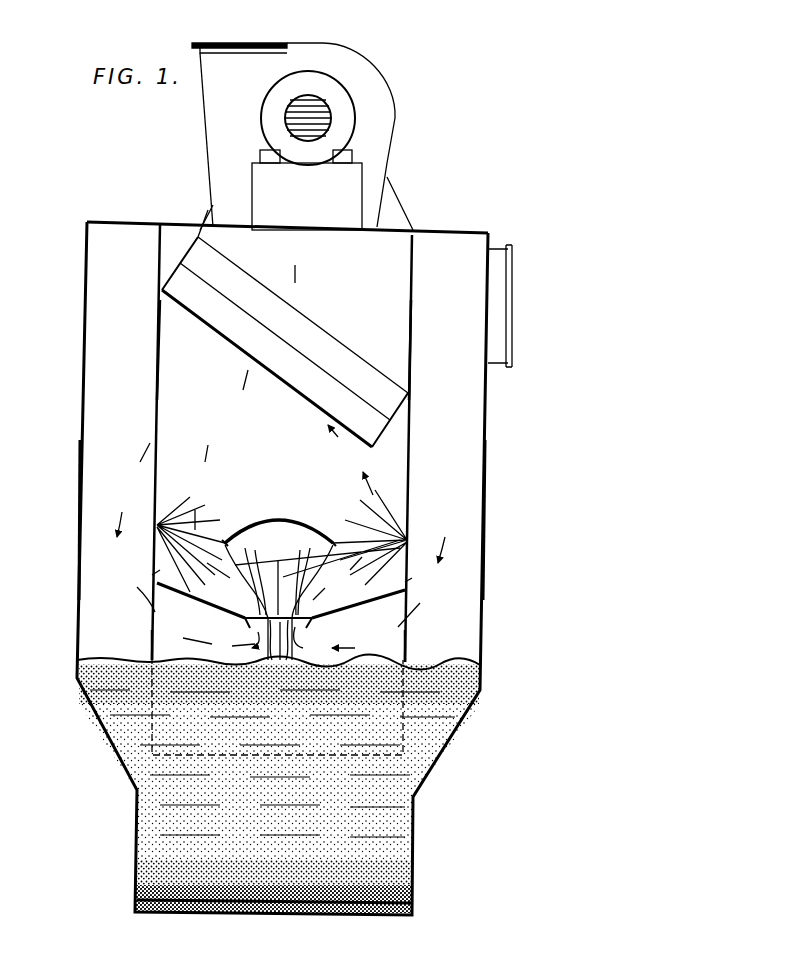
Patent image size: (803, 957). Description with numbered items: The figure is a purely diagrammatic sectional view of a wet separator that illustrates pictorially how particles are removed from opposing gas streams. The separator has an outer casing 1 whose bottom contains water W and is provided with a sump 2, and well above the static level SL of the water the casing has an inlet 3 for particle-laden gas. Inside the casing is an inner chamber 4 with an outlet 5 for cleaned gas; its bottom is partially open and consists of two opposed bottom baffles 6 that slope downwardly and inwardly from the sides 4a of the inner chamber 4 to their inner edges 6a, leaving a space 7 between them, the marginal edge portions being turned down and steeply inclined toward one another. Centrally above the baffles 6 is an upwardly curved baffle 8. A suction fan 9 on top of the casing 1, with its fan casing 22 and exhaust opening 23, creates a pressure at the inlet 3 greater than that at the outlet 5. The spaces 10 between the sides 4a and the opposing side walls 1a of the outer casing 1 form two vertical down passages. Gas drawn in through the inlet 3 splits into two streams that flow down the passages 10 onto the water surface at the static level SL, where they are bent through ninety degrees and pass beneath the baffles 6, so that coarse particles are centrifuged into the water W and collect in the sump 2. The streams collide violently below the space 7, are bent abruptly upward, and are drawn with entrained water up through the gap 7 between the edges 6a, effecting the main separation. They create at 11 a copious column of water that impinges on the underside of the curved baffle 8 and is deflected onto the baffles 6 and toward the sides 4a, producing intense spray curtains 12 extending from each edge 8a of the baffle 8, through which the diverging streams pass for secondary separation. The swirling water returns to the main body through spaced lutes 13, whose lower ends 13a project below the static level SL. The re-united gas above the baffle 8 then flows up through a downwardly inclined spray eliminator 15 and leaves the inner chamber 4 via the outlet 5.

The outer casing 1 is at (488, 447).
The side walls of the outer casing 1a is at (87, 525).
The sump 2 is at (397, 847).
The inlet 3 is at (503, 272).
The inner chamber 4 is at (400, 362).
The sides of the inner chamber 4a is at (157, 343).
The outlet 5 is at (320, 230).
The bottom baffles 6 is at (203, 606).
The inner edges of the baffles 6a is at (220, 637).
The space 7 is at (246, 620).
The upwardly curved baffle 8 is at (279, 579).
The edge of the curved baffle 8a is at (225, 543).
The suction fan 9 is at (348, 105).
The vertical down passages 10 is at (93, 490).
The column of water 11 is at (345, 545).
The spray curtain 12 is at (153, 573).
The lutes 13 is at (158, 620).
The lower ends of the lutes 13a is at (160, 737).
The spray eliminator 15 is at (313, 330).
The casing of the suction fan 22 is at (322, 53).
The exhaust opening 23 is at (250, 43).
The water W is at (453, 708).
The static level SL is at (437, 667).